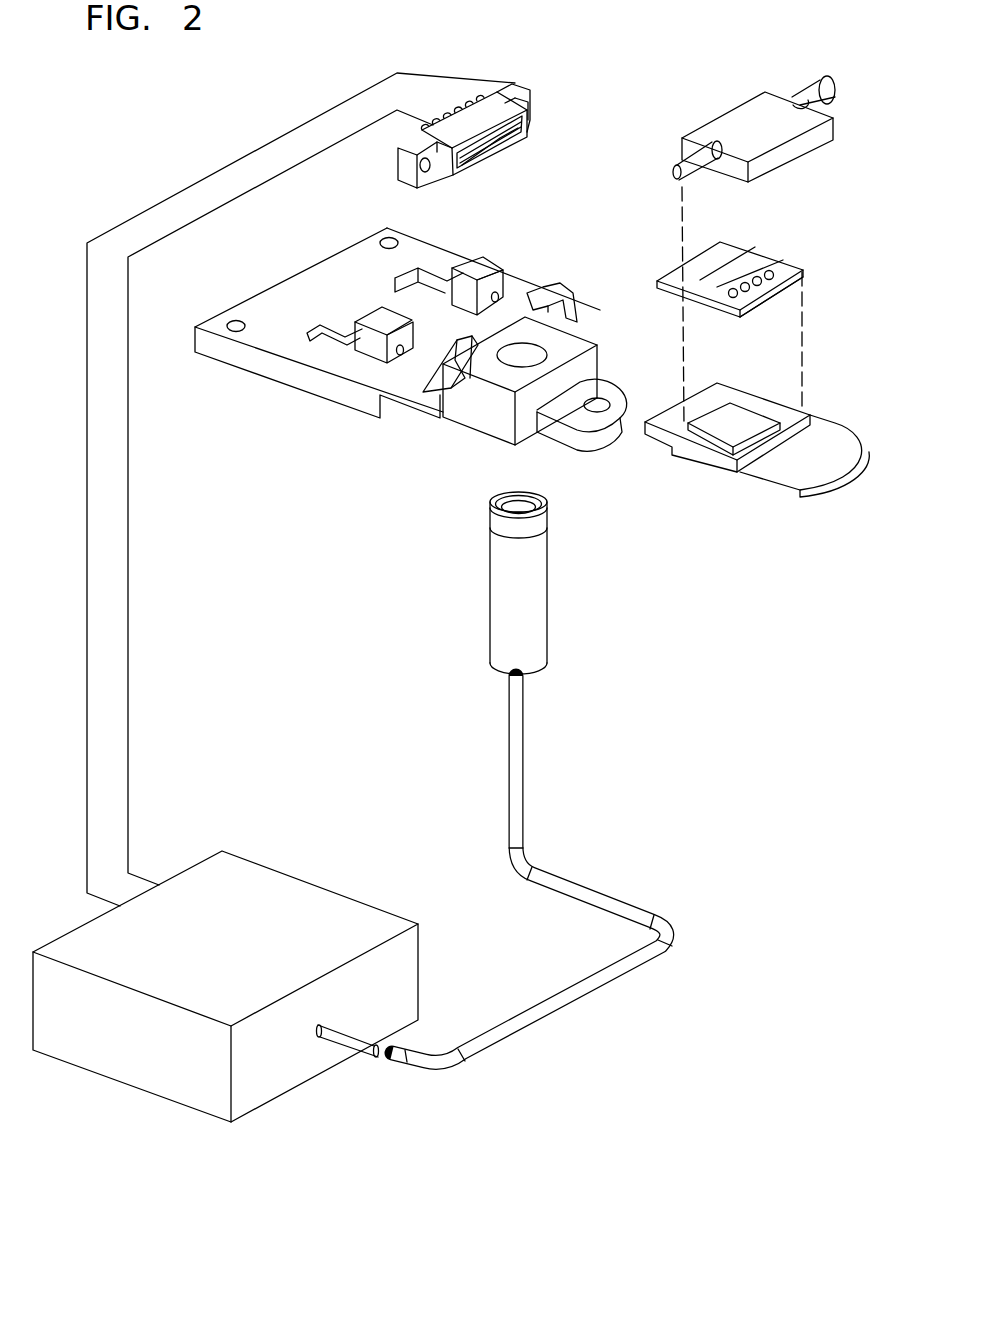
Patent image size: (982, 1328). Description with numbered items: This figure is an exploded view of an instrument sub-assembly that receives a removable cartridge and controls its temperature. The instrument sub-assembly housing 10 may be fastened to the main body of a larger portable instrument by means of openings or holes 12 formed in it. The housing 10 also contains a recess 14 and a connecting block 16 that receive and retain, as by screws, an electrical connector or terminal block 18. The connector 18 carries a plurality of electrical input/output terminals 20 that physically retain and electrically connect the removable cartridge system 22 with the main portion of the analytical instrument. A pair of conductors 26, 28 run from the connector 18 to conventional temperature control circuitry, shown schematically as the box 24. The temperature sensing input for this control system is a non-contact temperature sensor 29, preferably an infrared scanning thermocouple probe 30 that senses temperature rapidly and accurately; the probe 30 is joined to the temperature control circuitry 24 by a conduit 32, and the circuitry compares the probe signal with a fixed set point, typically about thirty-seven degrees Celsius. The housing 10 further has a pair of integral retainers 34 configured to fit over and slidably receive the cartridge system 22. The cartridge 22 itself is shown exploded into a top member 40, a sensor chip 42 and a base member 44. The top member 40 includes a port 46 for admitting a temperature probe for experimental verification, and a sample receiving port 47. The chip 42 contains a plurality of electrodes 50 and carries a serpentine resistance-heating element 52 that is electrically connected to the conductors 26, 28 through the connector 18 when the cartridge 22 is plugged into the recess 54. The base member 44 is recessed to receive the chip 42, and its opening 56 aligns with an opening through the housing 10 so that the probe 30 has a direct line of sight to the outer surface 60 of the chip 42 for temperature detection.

The instrument sub-assembly housing 10 is at (402, 344).
The openings or holes 12 is at (233, 324).
The recess 14 is at (413, 365).
The connecting block 16 is at (363, 350).
The electrical connector or terminal block 18 is at (485, 108).
The electrical input/output terminals 20 is at (466, 102).
The removable cartridge system 22 is at (757, 431).
The temperature control circuitry 24 is at (252, 880).
The conductor 26 is at (86, 700).
The conductor 28 is at (128, 760).
The non-contact temperature sensor 29 is at (548, 641).
The infrared scanning thermocouple probe 30 is at (558, 583).
The conduit 32 is at (525, 788).
The integral retainers 34 is at (470, 325).
The top member 40 is at (729, 125).
The sensor chip 42 is at (755, 257).
The base member 44 is at (835, 433).
The port 46 is at (685, 153).
The sample receiving port 47 is at (791, 97).
The electrodes 50 is at (745, 247).
The serpentine resistance-heating element 52 is at (803, 280).
The recess 54 is at (497, 138).
The opening 56 is at (527, 360).
The outer surface 60 is at (720, 292).